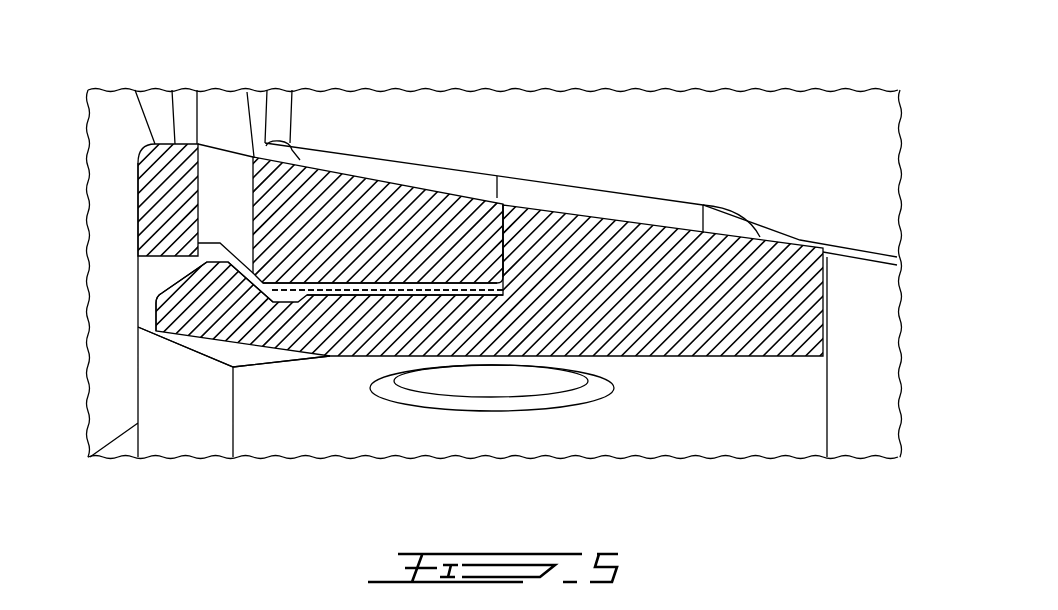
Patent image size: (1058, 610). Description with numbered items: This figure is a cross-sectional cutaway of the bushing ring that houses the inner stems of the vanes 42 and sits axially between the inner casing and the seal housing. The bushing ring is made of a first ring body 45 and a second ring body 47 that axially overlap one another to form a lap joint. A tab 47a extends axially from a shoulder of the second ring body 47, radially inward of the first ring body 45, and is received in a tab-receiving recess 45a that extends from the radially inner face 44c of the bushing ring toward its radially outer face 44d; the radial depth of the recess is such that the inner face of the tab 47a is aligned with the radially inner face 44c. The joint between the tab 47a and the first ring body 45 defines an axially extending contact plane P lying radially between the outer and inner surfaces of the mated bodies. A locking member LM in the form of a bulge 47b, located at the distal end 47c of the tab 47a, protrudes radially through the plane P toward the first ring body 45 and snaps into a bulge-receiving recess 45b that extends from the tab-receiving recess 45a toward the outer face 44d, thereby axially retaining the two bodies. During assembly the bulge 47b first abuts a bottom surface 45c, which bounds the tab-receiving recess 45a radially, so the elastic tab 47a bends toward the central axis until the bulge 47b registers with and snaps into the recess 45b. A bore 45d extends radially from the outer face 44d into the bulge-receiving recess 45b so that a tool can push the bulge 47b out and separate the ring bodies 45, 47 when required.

The vane 42 is at (740, 125).
The radially inner face 44c is at (395, 432).
The radially outer face 44d is at (663, 227).
The first ring body 45 is at (337, 160).
The tab-receiving recess 45a is at (388, 280).
The bulge-receiving recess 45b is at (197, 265).
The bottom surface 45c is at (463, 288).
The bore 45d is at (248, 190).
The second ring body 47 is at (823, 318).
The tab 47a is at (357, 333).
The bulge 47b is at (219, 272).
The distal end 47c is at (158, 304).
The locking member LM is at (320, 408).
The contact plane P is at (437, 292).